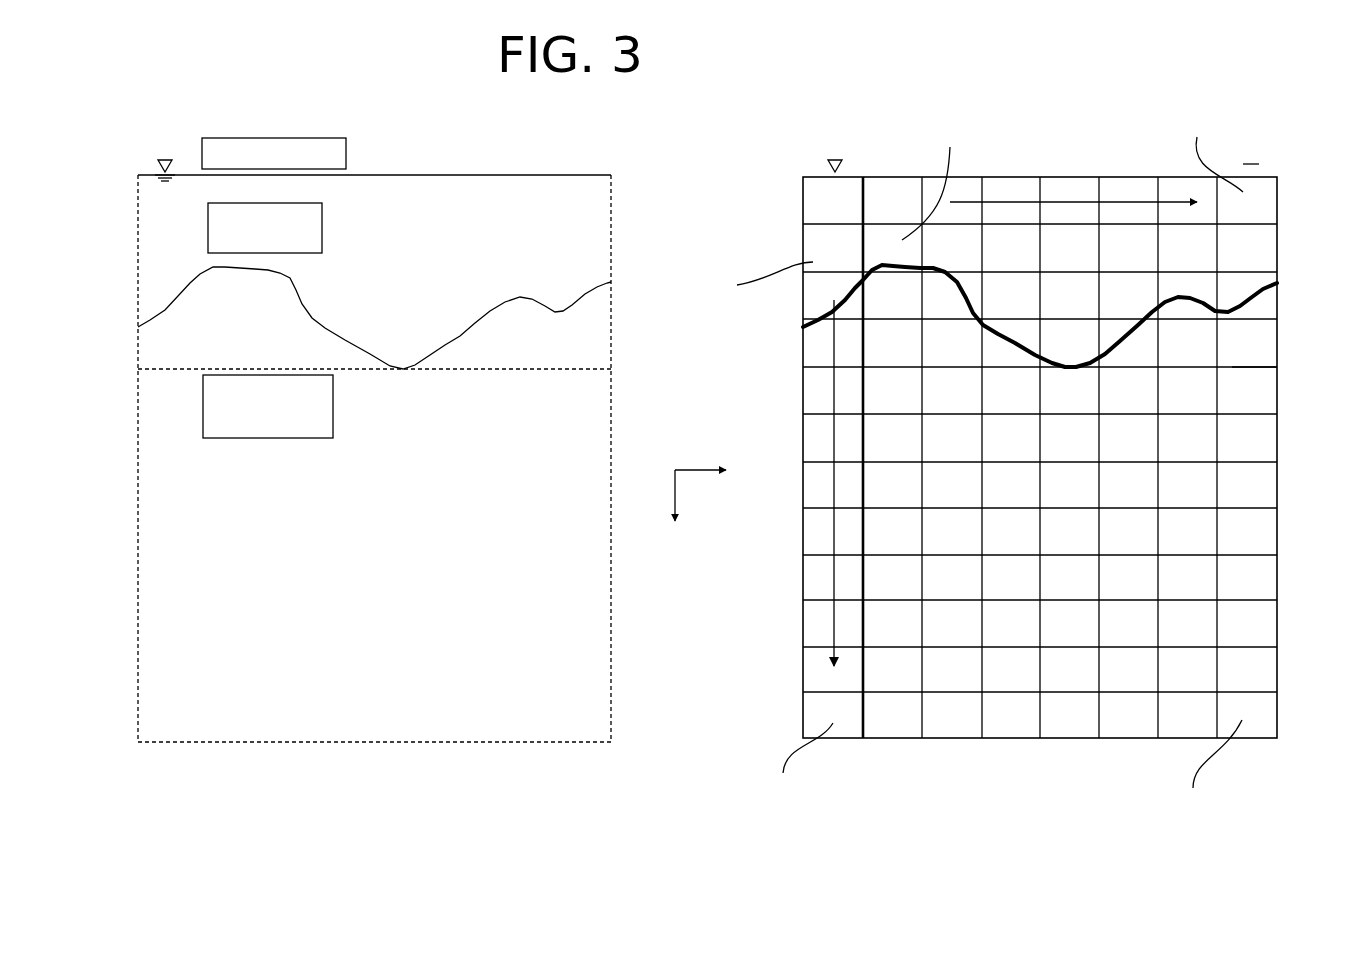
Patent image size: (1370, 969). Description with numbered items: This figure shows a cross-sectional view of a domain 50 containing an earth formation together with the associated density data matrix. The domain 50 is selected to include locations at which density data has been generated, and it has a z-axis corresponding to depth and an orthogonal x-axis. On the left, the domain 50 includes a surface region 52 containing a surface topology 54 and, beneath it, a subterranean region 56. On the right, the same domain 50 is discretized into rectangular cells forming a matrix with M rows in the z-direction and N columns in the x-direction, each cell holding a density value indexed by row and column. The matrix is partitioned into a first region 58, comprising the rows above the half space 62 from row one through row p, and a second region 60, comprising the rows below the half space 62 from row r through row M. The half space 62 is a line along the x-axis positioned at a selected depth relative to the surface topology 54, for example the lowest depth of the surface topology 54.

The domain 50 is at (812, 156).
The surface region 52 is at (460, 222).
The surface topology 54 is at (465, 335).
The subterranean region 56 is at (408, 537).
The first region 58 is at (903, 298).
The second region 60 is at (955, 577).
The half space 62 is at (525, 369).